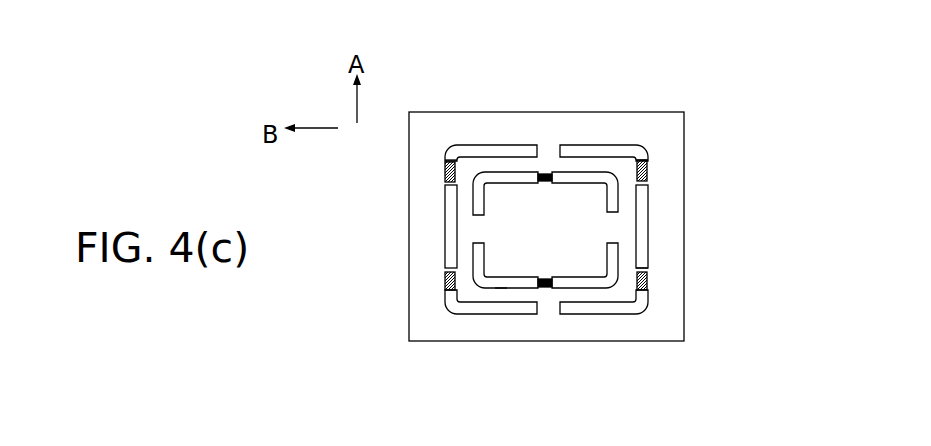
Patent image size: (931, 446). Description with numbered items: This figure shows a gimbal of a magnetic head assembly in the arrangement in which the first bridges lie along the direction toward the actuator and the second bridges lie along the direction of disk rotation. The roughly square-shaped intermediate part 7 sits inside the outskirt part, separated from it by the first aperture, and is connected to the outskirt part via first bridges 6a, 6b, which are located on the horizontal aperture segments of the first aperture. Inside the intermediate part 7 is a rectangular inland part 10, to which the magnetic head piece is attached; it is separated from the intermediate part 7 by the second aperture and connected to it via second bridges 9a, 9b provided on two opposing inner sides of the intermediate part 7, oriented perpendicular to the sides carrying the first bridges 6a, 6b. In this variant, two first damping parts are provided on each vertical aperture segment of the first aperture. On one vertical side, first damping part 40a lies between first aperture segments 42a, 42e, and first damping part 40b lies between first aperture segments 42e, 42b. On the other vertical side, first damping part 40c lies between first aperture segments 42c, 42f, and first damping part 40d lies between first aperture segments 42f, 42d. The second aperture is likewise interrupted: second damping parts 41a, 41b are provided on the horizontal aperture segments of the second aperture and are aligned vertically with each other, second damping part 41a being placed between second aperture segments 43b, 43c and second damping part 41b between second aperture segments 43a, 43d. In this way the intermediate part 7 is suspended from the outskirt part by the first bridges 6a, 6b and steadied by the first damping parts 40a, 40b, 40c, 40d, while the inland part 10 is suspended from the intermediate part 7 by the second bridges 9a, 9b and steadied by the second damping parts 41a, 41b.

The intermediate part 7 is at (610, 158).
The inland part 10 is at (588, 205).
The second bridge 9a is at (620, 230).
The second bridge 9b is at (475, 235).
The first bridge 6a is at (548, 172).
The first bridge 6b is at (545, 292).
The second damping part 41a is at (546, 300).
The second damping part 41b is at (541, 150).
The first aperture segment 42a is at (587, 150).
The first aperture segment 42b is at (633, 307).
The first aperture segment 42c is at (453, 308).
The first aperture segment 42d is at (475, 150).
The first aperture segment 42e is at (640, 205).
The first aperture segment 42f is at (445, 218).
The second aperture segment 43a is at (652, 157).
The second aperture segment 43b is at (648, 268).
The second aperture segment 43c is at (500, 288).
The second aperture segment 43d is at (445, 160).
The first damping part 40a is at (633, 152).
The first damping part 40b is at (660, 283).
The first damping part 40c is at (436, 283).
The first damping part 40d is at (436, 177).